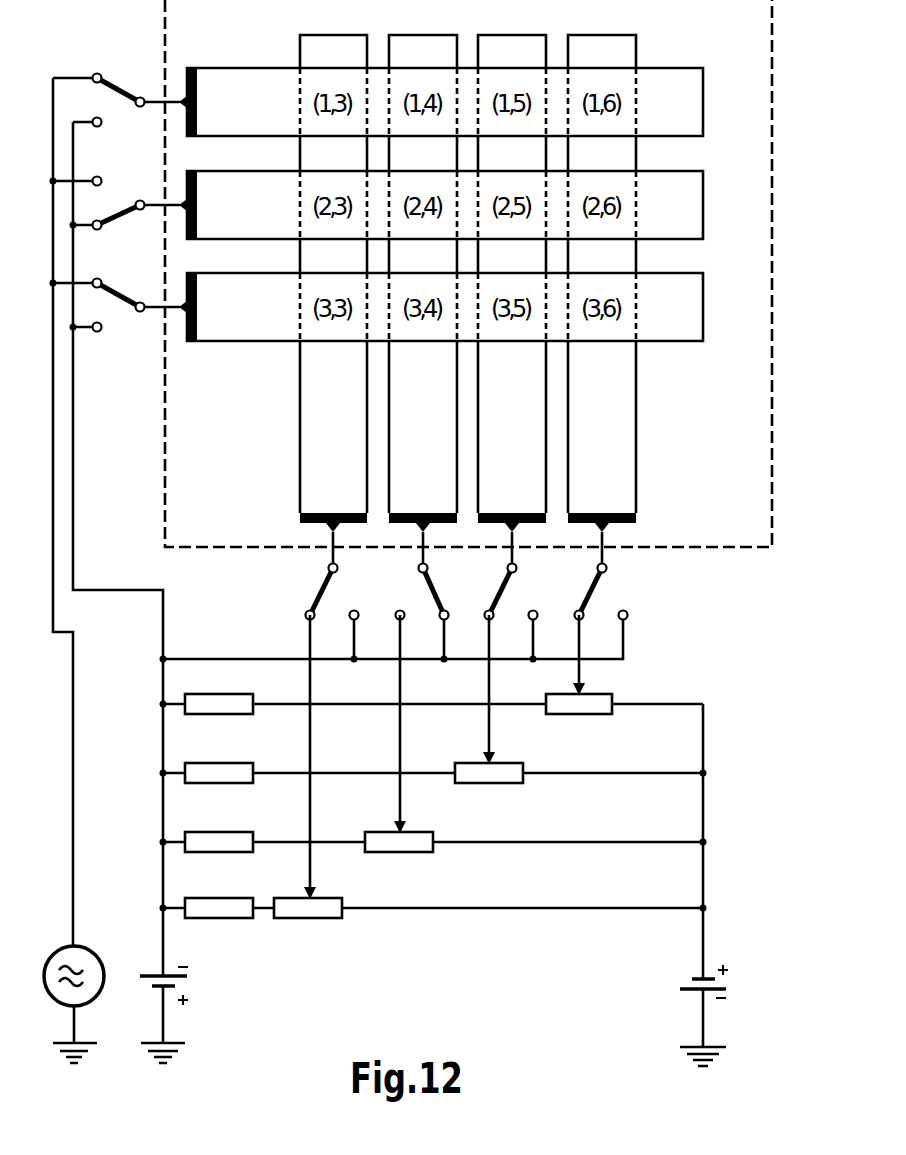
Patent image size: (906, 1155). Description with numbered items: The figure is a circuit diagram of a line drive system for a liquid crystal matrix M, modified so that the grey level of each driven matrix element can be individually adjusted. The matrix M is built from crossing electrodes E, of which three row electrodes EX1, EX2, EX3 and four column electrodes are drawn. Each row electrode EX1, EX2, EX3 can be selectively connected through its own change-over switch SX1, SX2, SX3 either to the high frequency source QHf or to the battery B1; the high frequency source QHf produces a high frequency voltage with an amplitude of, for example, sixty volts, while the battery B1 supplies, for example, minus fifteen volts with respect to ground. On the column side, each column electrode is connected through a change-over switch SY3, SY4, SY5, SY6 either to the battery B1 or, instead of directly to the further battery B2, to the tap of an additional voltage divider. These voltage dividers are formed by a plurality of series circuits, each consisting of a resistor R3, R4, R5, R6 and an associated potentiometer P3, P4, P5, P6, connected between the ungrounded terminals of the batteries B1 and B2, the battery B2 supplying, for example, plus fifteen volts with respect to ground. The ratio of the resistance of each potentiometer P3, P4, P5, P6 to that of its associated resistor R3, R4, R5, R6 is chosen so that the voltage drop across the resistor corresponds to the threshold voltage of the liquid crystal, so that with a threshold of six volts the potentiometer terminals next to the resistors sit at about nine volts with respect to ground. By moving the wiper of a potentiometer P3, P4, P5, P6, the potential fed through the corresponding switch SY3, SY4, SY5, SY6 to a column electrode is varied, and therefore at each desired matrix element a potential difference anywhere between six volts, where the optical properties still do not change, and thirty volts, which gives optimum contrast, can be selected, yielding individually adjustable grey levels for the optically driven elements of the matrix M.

The change-over switch SX1 is at (134, 45).
The change-over switch SX2 is at (134, 165).
The change-over switch SX3 is at (134, 262).
The electrode E is at (198, 82).
The row electrode EX1 is at (690, 104).
The row electrode EX2 is at (690, 207).
The row electrode EX3 is at (690, 309).
The matrix M is at (770, 458).
The change-over switch SY3 is at (302, 574).
The change-over switch SY4 is at (392, 574).
The change-over switch SY5 is at (481, 574).
The change-over switch SY6 is at (571, 574).
The resistor R3 is at (218, 891).
The resistor R4 is at (264, 825).
The resistor R5 is at (309, 756).
The resistor R6 is at (354, 687).
The potentiometer P3 is at (488, 790).
The potentiometer P4 is at (534, 757).
The potentiometer P5 is at (579, 723).
The potentiometer P6 is at (624, 689).
The high frequency source QHf is at (83, 985).
The battery B1 is at (187, 1013).
The battery B2 is at (725, 1015).